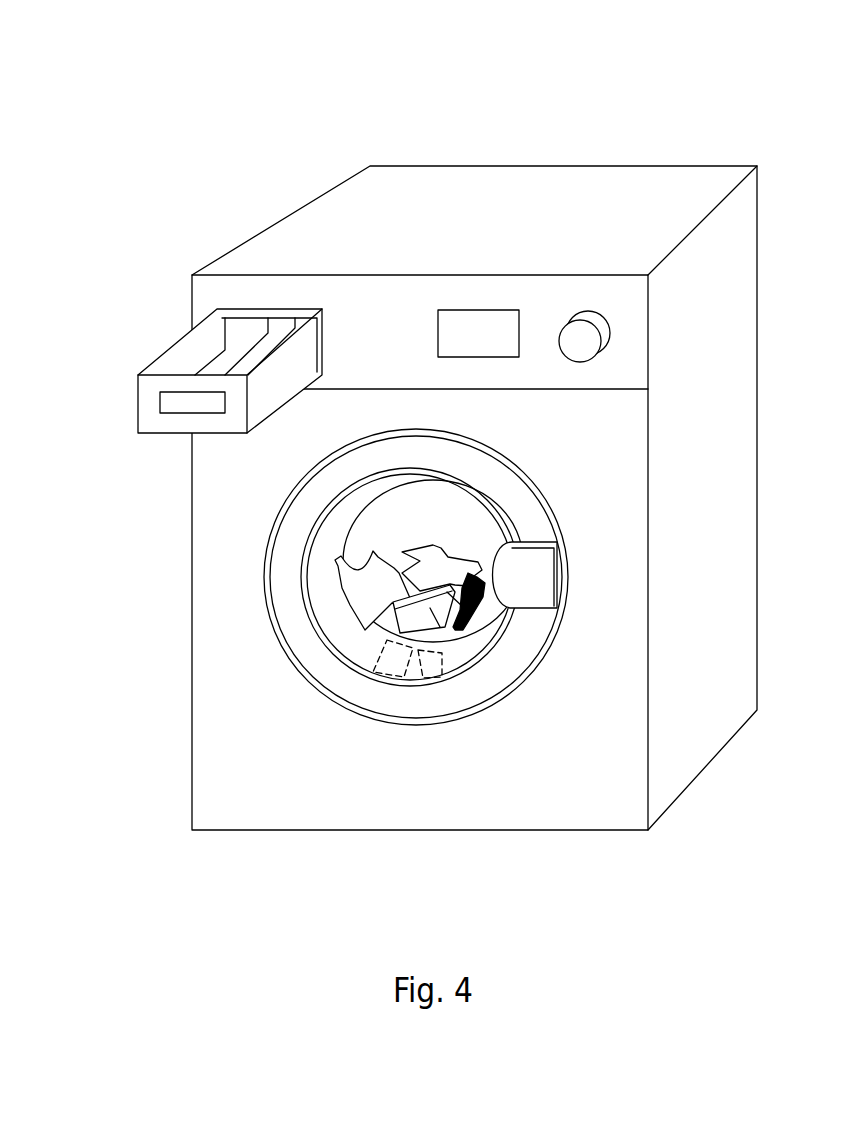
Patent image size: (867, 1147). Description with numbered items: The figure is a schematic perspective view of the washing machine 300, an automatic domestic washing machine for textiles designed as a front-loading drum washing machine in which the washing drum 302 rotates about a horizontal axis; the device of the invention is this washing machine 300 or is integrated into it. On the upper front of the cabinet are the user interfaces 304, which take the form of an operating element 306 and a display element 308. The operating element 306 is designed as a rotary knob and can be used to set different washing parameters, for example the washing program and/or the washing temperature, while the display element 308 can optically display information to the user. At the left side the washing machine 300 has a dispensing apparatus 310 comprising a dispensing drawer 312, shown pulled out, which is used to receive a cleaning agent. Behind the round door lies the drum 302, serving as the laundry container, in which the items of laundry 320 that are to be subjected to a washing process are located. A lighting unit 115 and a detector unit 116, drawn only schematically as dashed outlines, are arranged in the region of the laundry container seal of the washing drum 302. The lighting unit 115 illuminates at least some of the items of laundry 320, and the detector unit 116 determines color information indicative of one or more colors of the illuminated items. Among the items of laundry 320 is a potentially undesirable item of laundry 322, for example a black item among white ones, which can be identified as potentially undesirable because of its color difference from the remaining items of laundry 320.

The washing machine 300 is at (263, 116).
The washing drum 302 is at (480, 520).
The user interfaces 304 is at (617, 367).
The operating element 306 is at (582, 333).
The display element 308 is at (463, 325).
The dispensing apparatus 310 is at (191, 345).
The dispensing drawer 312 is at (133, 405).
The items of laundry 320 is at (349, 622).
The potentially undesirable item of laundry 322 is at (477, 620).
The lighting unit 115 is at (390, 667).
The detector unit 116 is at (426, 670).